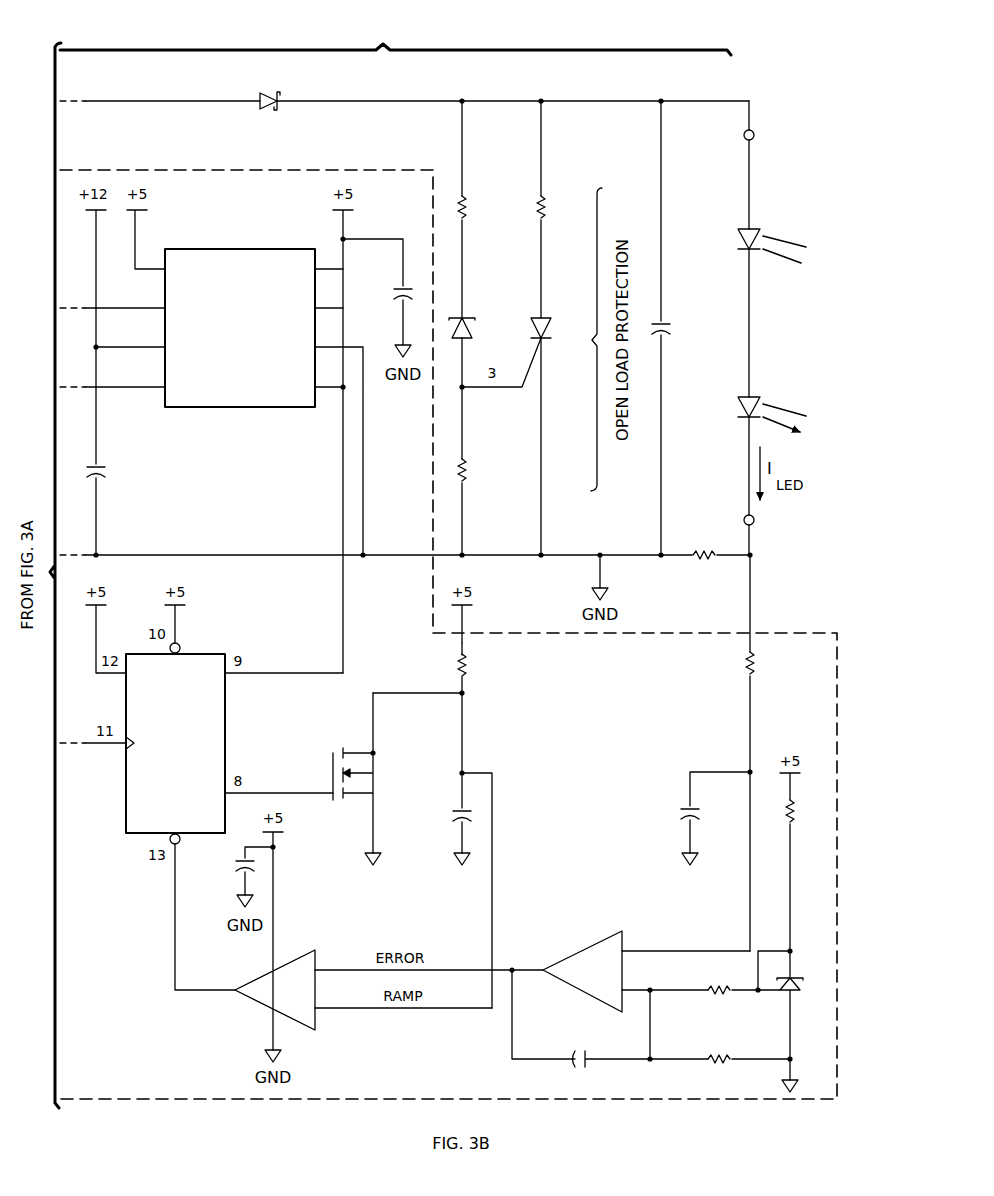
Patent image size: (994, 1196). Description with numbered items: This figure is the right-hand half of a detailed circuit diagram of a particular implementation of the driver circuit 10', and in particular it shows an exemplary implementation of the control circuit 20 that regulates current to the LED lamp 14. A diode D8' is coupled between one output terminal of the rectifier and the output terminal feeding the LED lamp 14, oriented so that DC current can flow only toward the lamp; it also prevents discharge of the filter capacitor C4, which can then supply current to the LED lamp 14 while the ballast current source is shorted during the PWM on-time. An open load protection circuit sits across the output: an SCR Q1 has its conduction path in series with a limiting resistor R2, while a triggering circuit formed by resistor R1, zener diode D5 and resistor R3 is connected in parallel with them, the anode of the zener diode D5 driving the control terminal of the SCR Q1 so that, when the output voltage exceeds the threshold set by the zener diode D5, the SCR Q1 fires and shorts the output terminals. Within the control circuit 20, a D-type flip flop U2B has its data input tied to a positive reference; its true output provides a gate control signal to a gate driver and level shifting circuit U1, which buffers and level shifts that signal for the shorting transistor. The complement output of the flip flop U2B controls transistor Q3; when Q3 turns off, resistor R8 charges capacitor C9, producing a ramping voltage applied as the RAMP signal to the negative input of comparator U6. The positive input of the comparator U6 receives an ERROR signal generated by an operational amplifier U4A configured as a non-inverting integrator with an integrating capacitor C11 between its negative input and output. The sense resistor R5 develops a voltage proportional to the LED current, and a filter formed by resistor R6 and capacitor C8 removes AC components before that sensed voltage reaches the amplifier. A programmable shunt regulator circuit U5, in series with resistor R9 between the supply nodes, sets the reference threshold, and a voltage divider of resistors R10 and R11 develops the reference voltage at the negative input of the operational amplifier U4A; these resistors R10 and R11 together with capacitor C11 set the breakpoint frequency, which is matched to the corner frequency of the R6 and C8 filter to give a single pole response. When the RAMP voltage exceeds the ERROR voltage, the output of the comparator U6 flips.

The driver circuit 10' is at (390, 564).
The control circuit 20 is at (336, 164).
The LED lamp 14 is at (771, 214).
The gate driver and level shifting circuit U1 is at (240, 340).
The D-type flip flop U2B is at (175, 743).
The operational amplifier U4A is at (582, 971).
The programmable shunt regulator circuit U5 is at (805, 1032).
The comparator U6 is at (275, 990).
The SCR Q1 is at (556, 436).
The transistor Q3 is at (370, 792).
The zener diode D5 is at (477, 328).
The diode D8' is at (417, 87).
The resistor R1 is at (476, 209).
The limiting resistor R2 is at (555, 209).
The resistor R3 is at (477, 446).
The sense resistor R5 is at (705, 555).
The resistor R6 is at (765, 753).
The resistor R8 is at (477, 708).
The resistor R9 is at (805, 889).
The resistor R10 is at (720, 979).
The resistor R11 is at (748, 1048).
The filter capacitor C4 is at (673, 328).
The capacitor C8 is at (711, 831).
The capacitor C9 is at (451, 832).
The integrating capacitor C11 is at (636, 1049).